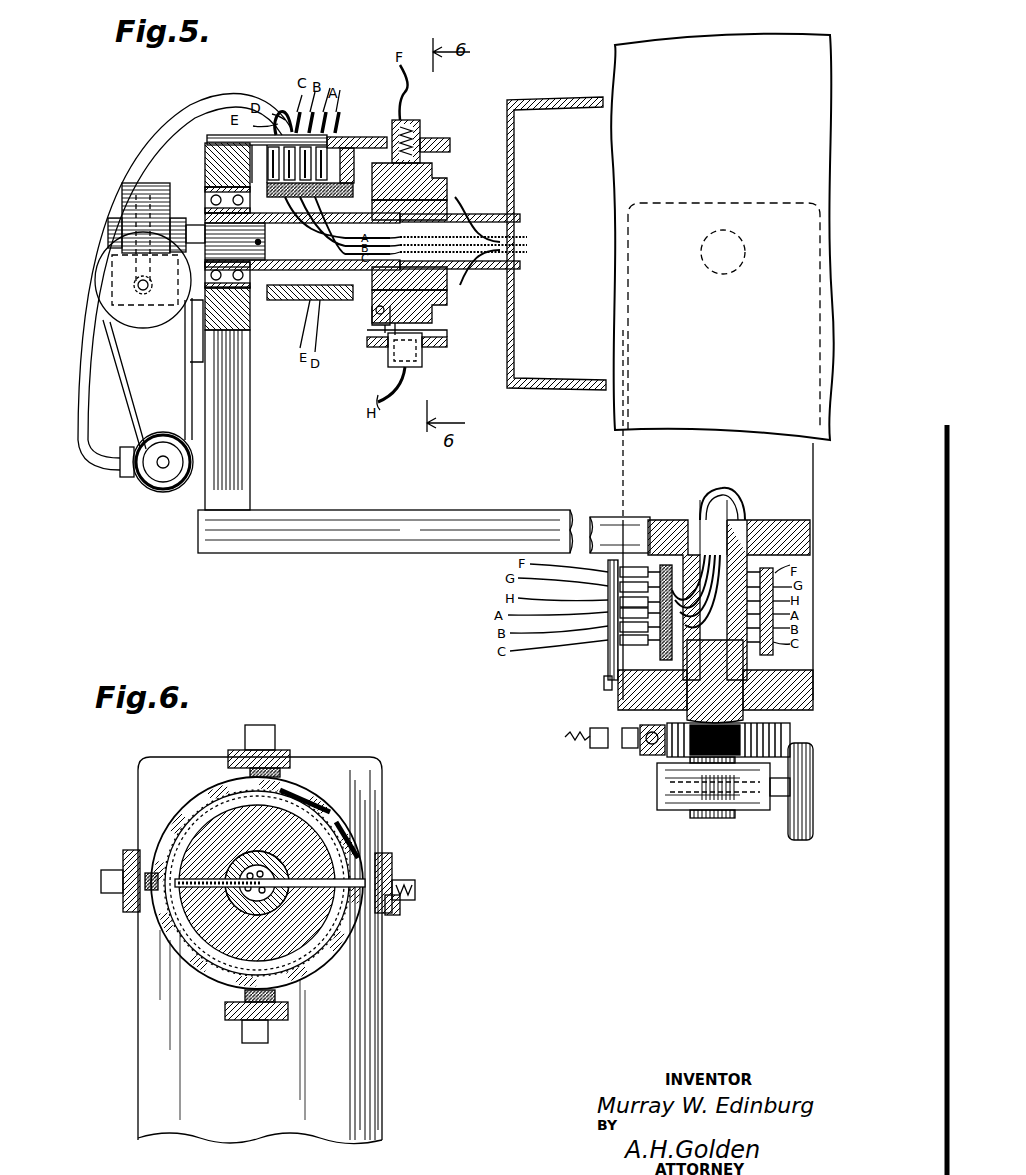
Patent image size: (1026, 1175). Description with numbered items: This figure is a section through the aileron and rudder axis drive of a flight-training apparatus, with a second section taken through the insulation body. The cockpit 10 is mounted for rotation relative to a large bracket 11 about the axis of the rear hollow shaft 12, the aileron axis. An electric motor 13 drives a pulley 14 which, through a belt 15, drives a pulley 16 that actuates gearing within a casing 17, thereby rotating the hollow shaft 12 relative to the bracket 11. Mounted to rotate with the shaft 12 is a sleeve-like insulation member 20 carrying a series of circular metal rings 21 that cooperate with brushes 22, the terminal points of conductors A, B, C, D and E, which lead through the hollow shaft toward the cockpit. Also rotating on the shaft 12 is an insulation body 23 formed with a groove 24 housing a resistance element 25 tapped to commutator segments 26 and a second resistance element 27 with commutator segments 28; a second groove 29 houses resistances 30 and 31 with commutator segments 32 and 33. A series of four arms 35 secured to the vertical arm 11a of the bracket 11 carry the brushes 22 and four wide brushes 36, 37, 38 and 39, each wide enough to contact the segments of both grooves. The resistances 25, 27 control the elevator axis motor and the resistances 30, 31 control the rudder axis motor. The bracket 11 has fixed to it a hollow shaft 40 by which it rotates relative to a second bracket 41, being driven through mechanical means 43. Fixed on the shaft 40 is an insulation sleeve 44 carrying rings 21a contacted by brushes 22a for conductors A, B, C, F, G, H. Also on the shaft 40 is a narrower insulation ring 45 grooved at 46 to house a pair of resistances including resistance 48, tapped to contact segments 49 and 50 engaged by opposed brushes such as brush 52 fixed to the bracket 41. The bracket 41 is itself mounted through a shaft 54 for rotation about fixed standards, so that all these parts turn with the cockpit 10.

In FIG. 5, the cockpit 10 is at (742, 170).
In FIG. 5, the large bracket 11 is at (333, 545).
In FIG. 6, the large bracket 11 is at (382, 1007).
In FIG. 5, the vertical arm of large bracket 11a is at (240, 458).
In FIG. 5, the rear hollow shaft 12 is at (262, 300).
In FIG. 6, the rear hollow shaft 12 is at (240, 830).
In FIG. 5, the electric motor 13 is at (163, 492).
In FIG. 5, the pulley 14 is at (152, 474).
In FIG. 5, the belt 15 is at (113, 364).
In FIG. 5, the pulley 16 is at (100, 293).
In FIG. 5, the casing 17 is at (158, 183).
In FIG. 5, the sleeve-like insulation member 20 is at (300, 300).
In FIG. 5, the circular metal rings 21 is at (283, 300).
In FIG. 5, the rings 21a is at (620, 630).
In FIG. 5, the brushes 22 is at (348, 137).
In FIG. 5, the brushes 22a is at (608, 596).
In FIG. 5, the insulation body 23 is at (440, 198).
In FIG. 6, the insulation body 23 is at (355, 845).
In FIG. 5, the groove 24 is at (435, 170).
In FIG. 6, the groove 24 is at (283, 787).
In FIG. 5, the resistance element 25 is at (440, 298).
In FIG. 6, the resistance element 25 is at (345, 830).
In FIG. 5, the commutator segments 26 is at (438, 320).
In FIG. 6, the commutator segments 26 is at (310, 785).
In FIG. 6, the second resistance element 27 is at (175, 820).
In FIG. 6, the commutator segments 28 is at (165, 835).
In FIG. 5, the second groove 29 is at (385, 335).
In FIG. 5, the resistance 30 is at (372, 316).
In FIG. 5, the resistance 31 is at (368, 160).
In FIG. 5, the commutator segments 32 is at (375, 347).
In FIG. 5, the commutator segments 33 is at (375, 125).
In FIG. 5, the arms 35 is at (445, 138).
In FIG. 6, the arms 35 is at (285, 750).
In FIG. 5, the brush 36 is at (418, 122).
In FIG. 6, the brush 36 is at (262, 748).
In FIG. 6, the brush 37 is at (380, 915).
In FIG. 5, the brush 38 is at (422, 357).
In FIG. 6, the brush 38 is at (275, 996).
In FIG. 6, the brush 39 is at (145, 890).
In FIG. 5, the hollow shaft 40 is at (700, 520).
In FIG. 5, the second bracket 41 is at (620, 470).
In FIG. 5, the mechanical means 43 is at (686, 822).
In FIG. 5, the insulation sleeve 44 is at (660, 660).
In FIG. 5, the insulation ring 45 is at (650, 757).
In FIG. 5, the groove 46 is at (645, 750).
In FIG. 5, the resistance 48 is at (640, 712).
In FIG. 5, the contact segments 49 is at (765, 722).
In FIG. 5, the contact segments 50 is at (630, 752).
In FIG. 5, the brush 52 is at (625, 747).
In FIG. 5, the shaft 54 is at (706, 270).